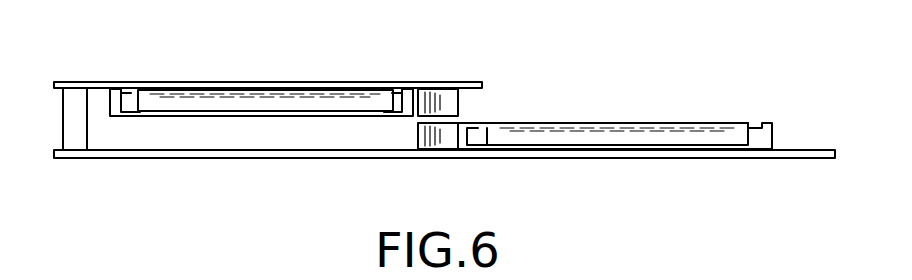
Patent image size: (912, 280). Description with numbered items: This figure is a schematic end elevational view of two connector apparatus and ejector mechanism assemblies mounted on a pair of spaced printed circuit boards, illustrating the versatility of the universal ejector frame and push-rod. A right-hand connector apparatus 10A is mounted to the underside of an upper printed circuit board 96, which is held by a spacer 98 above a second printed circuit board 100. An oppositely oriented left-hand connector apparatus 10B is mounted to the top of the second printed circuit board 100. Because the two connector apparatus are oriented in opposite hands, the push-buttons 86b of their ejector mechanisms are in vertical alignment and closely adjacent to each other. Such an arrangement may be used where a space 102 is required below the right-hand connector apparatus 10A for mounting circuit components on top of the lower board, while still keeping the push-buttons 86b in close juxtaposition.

The printed circuit board 96 is at (303, 83).
The spacer 98 is at (75, 130).
The space 102 is at (261, 145).
The right-hand connector apparatus 10A is at (200, 117).
The push-buttons 86b is at (450, 132).
The second printed circuit board 100 is at (640, 133).
The left-hand connector apparatus 10B is at (745, 122).